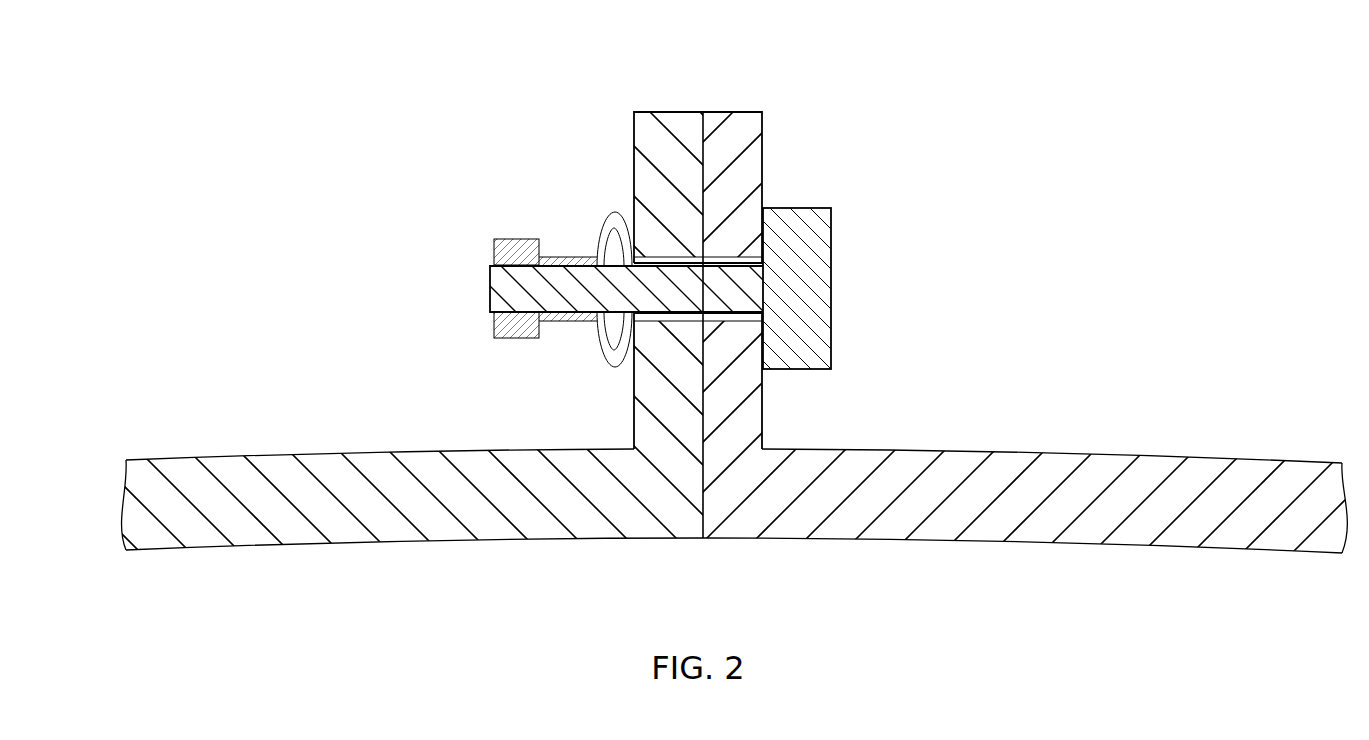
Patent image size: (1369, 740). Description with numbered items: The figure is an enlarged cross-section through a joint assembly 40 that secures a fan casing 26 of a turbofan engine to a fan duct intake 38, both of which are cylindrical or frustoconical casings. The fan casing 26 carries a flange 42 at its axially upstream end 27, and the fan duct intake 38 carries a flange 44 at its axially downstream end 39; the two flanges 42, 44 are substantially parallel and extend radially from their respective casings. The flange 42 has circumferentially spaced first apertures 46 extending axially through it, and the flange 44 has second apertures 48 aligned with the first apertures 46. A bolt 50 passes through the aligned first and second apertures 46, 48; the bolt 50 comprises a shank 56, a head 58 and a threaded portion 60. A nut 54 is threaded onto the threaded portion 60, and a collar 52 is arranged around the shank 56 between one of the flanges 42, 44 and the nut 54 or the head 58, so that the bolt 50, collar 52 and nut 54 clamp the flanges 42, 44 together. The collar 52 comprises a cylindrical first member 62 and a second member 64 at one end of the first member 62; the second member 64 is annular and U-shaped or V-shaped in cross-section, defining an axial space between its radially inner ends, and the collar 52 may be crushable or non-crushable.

The fan casing 26 is at (1308, 462).
The axially upstream end 27 is at (790, 523).
The fan duct intake 38 is at (233, 460).
The axially downstream end 39 is at (602, 523).
The joint assembly 40 is at (898, 177).
The flange 42 is at (745, 118).
The flange 44 is at (678, 118).
The first apertures 46 is at (735, 315).
The second apertures 48 is at (670, 317).
The bolt 50 is at (820, 240).
The collar 52 is at (556, 263).
The nut 54 is at (500, 257).
The shank 56 is at (713, 285).
The head 58 is at (823, 315).
The threaded portion 60 is at (490, 293).
The first member 62 is at (560, 253).
The second member 64 is at (613, 212).